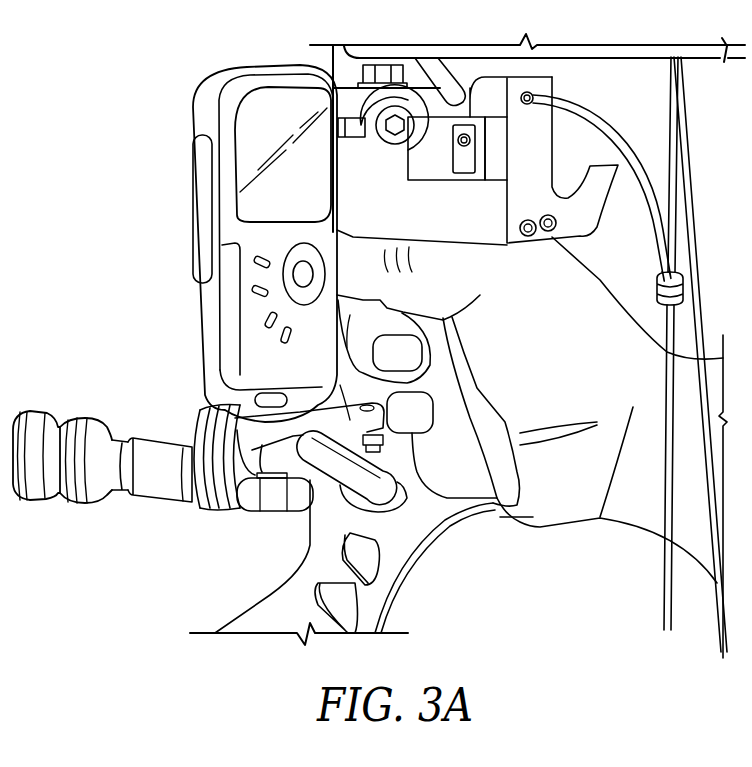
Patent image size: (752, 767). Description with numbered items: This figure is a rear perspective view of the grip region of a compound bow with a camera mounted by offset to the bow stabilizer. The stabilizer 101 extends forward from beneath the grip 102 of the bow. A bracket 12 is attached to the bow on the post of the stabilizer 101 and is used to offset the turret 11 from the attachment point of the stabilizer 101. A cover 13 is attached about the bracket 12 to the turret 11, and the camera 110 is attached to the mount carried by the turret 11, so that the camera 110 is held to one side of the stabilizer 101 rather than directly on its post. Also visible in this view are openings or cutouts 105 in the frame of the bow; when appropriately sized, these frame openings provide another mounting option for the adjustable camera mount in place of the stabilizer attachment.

The turret 11 is at (240, 500).
The bracket 12 is at (225, 500).
The cover 13 is at (210, 498).
The stabilizer 101 is at (75, 503).
The grip 102 is at (453, 470).
The openings or cutouts 105 is at (370, 565).
The camera 110 is at (197, 310).